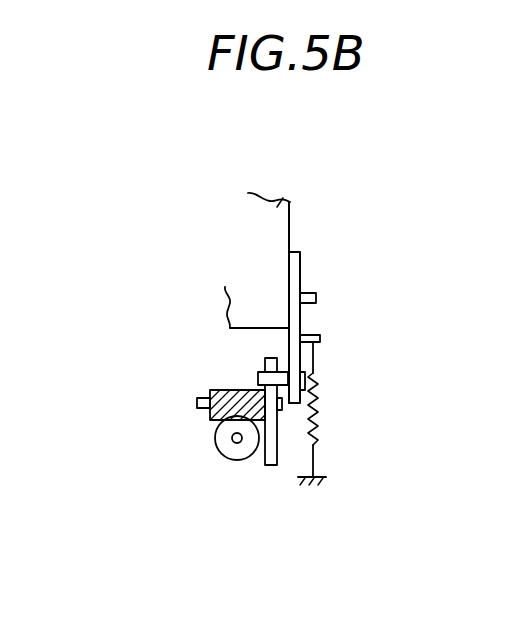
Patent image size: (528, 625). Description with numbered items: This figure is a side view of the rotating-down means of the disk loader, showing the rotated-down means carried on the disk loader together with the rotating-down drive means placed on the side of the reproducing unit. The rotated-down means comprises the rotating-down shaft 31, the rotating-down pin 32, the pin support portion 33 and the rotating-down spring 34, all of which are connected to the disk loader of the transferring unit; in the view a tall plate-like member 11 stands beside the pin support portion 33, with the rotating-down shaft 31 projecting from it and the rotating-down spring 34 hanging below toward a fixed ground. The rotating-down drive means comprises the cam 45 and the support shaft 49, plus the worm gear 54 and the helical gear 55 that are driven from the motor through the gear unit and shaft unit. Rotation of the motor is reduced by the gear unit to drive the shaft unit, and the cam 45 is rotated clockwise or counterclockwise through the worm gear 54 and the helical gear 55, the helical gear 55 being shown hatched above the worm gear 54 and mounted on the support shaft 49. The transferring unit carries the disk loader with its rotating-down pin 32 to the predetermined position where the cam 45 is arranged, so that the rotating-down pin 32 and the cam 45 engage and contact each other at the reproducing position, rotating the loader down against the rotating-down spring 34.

The recording sheet / guide plate 11 is at (283, 200).
The pin support portion 33 is at (300, 250).
The rotating-down shaft 31 is at (317, 297).
The rotating-down spring 34 is at (322, 423).
The rotating-down pin 32 is at (258, 379).
The cam 45 is at (270, 465).
The helical gear 55 is at (212, 390).
The support shaft 49 is at (197, 404).
The worm gear 54 is at (222, 457).